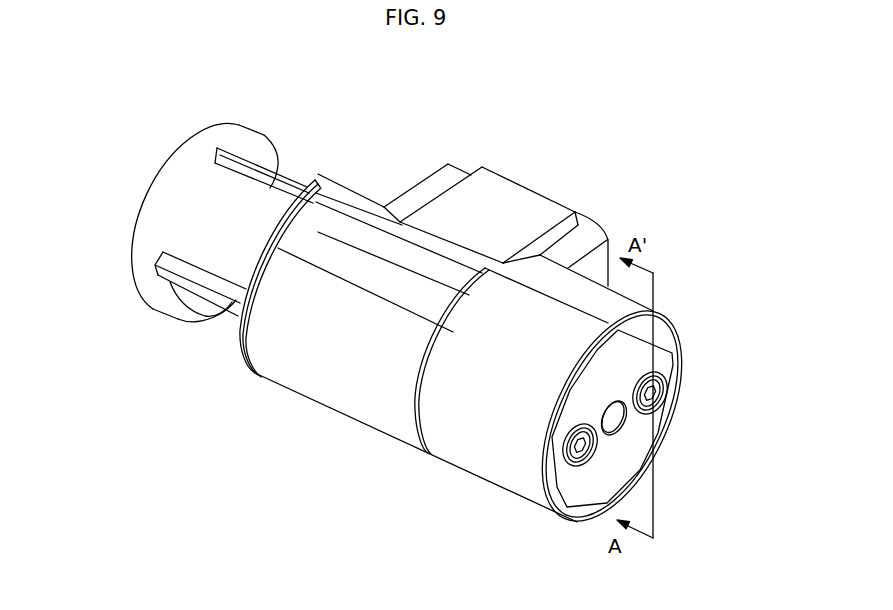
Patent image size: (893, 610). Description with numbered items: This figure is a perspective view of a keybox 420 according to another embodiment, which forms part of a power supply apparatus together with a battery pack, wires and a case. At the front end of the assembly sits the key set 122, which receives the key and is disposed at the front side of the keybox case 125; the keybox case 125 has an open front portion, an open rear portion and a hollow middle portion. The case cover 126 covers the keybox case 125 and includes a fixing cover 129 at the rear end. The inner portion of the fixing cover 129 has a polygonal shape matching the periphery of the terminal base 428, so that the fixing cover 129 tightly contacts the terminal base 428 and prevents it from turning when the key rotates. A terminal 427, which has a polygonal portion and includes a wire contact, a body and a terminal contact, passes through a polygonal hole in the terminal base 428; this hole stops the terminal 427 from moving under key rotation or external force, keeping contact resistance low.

The key set 122 is at (172, 180).
The keybox case 125 is at (438, 247).
The case cover 126 is at (338, 377).
The keybox 420 is at (612, 202).
The fixing cover 129 is at (662, 338).
The terminal 427 is at (657, 391).
The terminal base 428 is at (623, 445).